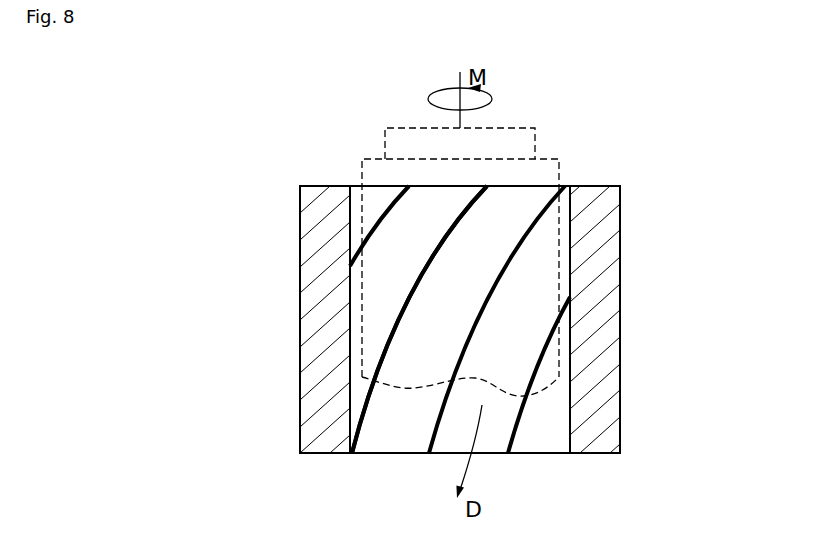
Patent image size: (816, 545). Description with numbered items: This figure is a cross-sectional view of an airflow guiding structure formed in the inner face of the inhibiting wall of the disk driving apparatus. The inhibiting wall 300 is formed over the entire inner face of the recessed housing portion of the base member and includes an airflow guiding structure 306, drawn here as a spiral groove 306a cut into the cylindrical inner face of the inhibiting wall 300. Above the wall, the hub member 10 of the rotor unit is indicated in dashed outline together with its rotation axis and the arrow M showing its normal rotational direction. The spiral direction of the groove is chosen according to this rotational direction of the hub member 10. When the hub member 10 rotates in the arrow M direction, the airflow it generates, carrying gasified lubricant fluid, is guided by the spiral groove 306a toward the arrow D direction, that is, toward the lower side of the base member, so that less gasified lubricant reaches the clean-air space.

The hub member 10 is at (547, 160).
The inhibiting wall 300 is at (327, 260).
The airflow guiding structure 306 is at (528, 272).
The spiral groove 306a is at (364, 411).